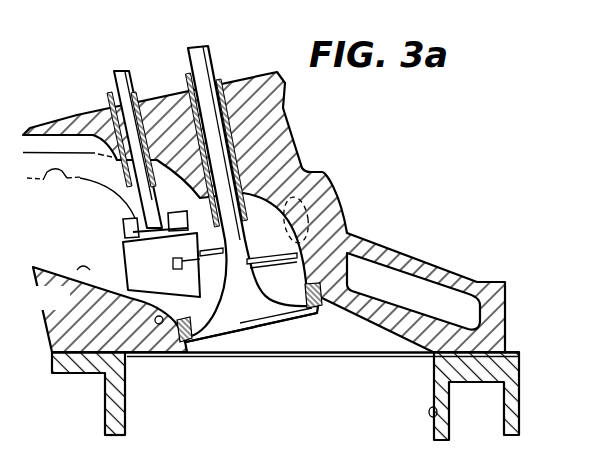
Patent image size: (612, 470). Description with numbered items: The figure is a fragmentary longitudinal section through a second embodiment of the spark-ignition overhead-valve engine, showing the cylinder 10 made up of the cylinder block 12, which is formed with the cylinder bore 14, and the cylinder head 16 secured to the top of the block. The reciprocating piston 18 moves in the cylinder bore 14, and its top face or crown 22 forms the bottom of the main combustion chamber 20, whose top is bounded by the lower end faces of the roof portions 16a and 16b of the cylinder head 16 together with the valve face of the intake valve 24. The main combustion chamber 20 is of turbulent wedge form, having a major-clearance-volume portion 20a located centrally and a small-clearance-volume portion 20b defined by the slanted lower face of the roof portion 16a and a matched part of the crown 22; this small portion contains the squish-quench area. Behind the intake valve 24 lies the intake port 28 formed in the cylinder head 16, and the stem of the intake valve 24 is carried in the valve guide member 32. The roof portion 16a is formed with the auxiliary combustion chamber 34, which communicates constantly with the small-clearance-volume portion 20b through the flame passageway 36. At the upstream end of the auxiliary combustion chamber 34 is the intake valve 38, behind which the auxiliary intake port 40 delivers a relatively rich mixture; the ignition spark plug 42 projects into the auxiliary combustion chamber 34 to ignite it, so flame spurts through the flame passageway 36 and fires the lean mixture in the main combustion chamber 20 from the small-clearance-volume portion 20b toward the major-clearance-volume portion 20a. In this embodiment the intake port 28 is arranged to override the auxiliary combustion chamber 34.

The cylinder 10 is at (99, 399).
The cylinder block 12 is at (520, 406).
The cylinder bore 14 is at (437, 414).
The cylinder head 16 is at (303, 212).
The roof portion 16a is at (160, 343).
The roof portion 16b is at (346, 335).
The reciprocating piston 18 is at (123, 435).
The main combustion chamber 20 is at (291, 235).
The major-clearance-volume portion 20a is at (290, 335).
The small-clearance-volume portion 20b is at (181, 346).
The top face or crown 22 is at (397, 353).
The intake valve 24 is at (248, 258).
The intake port 28 is at (110, 309).
The valve guide member 32 is at (218, 82).
The auxiliary combustion chamber 34 is at (128, 250).
The flame passageway 36 is at (152, 322).
The intake valve 38 is at (140, 200).
The auxiliary intake port 40 is at (81, 194).
The ignition spark plug 42 is at (173, 265).